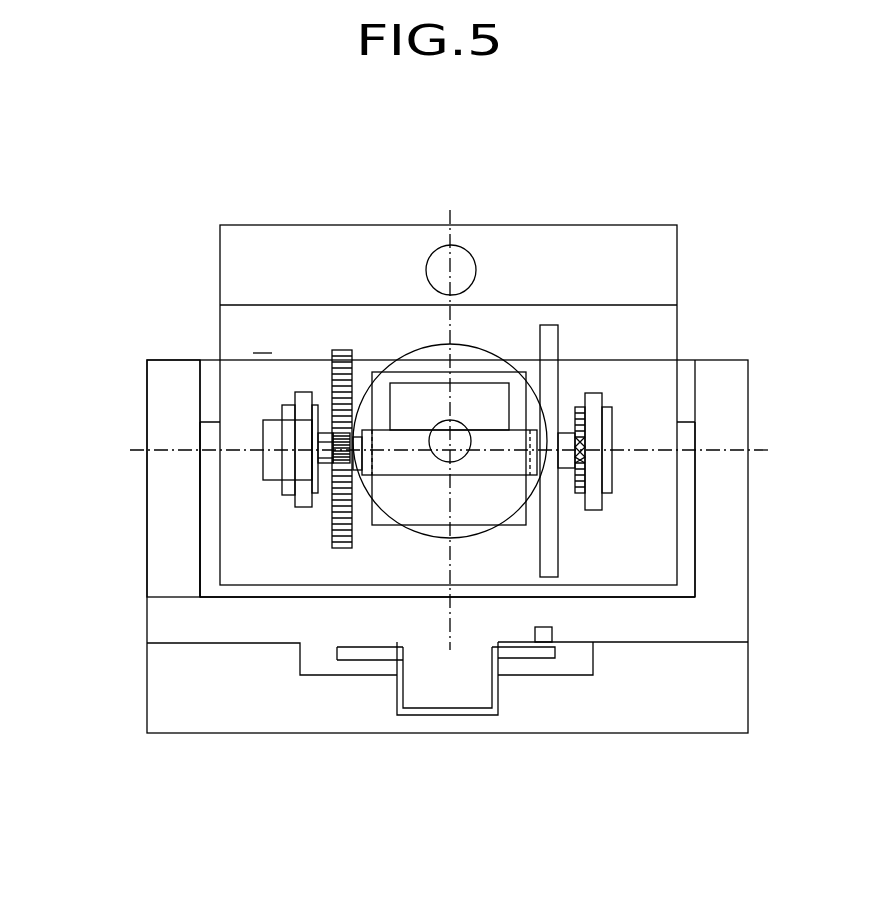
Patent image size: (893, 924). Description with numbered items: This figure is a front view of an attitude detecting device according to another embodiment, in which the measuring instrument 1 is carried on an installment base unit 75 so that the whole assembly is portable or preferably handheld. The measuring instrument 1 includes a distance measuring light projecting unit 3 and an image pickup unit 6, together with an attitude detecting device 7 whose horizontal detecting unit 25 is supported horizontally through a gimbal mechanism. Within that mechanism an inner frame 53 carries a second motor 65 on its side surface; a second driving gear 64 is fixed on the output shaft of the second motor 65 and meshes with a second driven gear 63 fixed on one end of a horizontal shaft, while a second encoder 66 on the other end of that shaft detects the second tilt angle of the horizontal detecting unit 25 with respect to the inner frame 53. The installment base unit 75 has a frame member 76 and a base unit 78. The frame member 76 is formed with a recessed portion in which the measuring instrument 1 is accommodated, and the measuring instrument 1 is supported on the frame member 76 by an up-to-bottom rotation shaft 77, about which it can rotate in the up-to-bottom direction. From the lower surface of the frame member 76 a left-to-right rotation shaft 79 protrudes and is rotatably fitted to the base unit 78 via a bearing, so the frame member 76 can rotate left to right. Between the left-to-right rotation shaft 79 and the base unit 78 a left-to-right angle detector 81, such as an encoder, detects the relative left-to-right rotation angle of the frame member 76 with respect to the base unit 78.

The measuring instrument 1 is at (642, 224).
The distance measuring light projecting unit 3 is at (478, 340).
The image pickup unit 6 is at (468, 248).
The attitude detecting device 7 is at (262, 339).
The horizontal detecting unit 25 is at (408, 372).
The inner frame 53 is at (597, 393).
The second driven gear 63 is at (345, 550).
The second driving gear 64 is at (336, 470).
The second motor 65 is at (268, 483).
The second encoder 66 is at (565, 387).
The installment base unit 75 is at (143, 420).
The frame member 76 is at (147, 546).
The up-to-bottom rotation shaft 77 is at (210, 421).
The base unit 78 is at (147, 683).
The left-to-right rotation shaft 79 is at (430, 690).
The left-to-right angle detector 81 is at (565, 652).